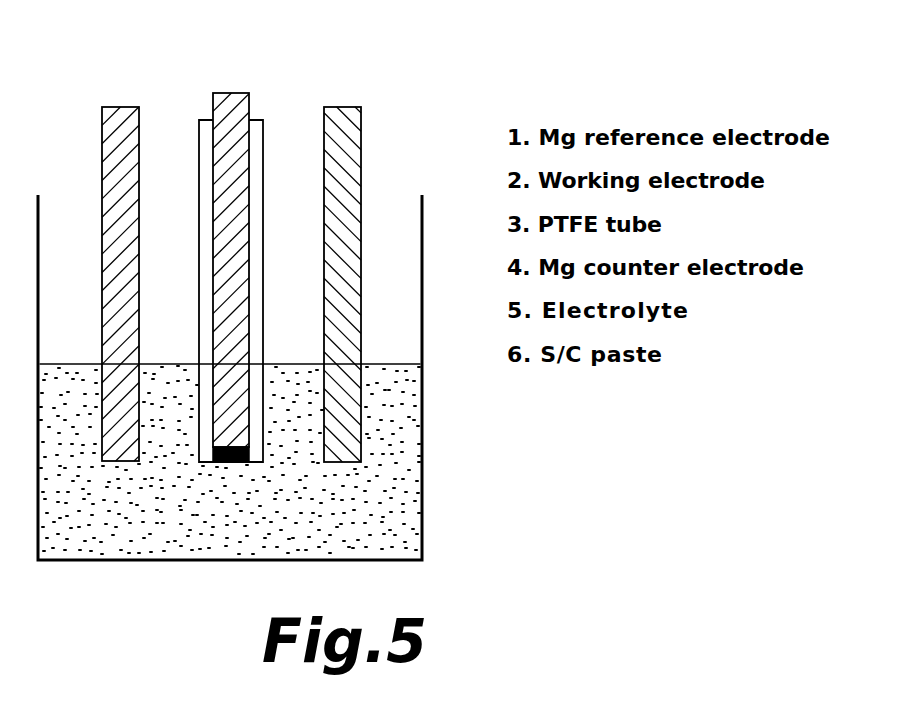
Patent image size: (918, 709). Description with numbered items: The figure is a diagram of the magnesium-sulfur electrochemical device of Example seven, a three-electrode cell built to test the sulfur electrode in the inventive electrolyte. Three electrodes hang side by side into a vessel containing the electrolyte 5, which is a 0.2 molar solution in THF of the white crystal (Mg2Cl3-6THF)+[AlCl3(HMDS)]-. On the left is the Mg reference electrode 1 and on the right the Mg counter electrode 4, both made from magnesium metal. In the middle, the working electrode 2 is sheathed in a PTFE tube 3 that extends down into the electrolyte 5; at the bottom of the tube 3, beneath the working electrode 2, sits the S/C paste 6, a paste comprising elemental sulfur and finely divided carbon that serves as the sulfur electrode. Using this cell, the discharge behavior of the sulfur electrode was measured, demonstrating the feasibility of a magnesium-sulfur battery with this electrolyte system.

The Mg reference electrode 1 is at (101, 170).
The working electrode 2 is at (228, 87).
The PTFE tube 3 is at (263, 143).
The Mg counter electrode 4 is at (362, 162).
The electrolyte 5 is at (400, 505).
The S/C paste 6 is at (228, 465).